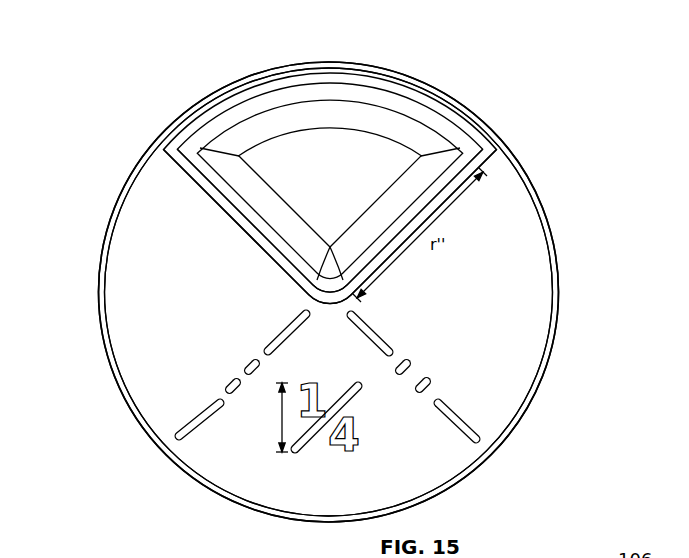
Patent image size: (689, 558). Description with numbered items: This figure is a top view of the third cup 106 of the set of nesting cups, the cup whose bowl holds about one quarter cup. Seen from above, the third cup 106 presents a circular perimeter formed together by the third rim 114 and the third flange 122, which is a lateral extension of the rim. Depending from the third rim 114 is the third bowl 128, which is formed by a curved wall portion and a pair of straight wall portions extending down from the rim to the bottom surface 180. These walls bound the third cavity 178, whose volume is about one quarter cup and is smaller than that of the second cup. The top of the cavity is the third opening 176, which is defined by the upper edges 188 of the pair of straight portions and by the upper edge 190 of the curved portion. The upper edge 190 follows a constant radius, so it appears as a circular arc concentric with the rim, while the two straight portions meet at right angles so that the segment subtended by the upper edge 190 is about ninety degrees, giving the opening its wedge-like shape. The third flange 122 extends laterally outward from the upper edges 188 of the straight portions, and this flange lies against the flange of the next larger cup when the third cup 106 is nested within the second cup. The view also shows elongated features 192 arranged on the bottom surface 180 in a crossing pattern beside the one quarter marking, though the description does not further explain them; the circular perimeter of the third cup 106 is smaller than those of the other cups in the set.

The third cup 106 is at (570, 38).
The third rim 114 is at (541, 380).
The third flange 122 is at (103, 327).
The third bowl 128 is at (335, 135).
The third opening 176 is at (243, 142).
The third cavity 178 is at (365, 157).
The bottom surface 180 is at (277, 148).
The upper edges of the pair of third straight portions 188 is at (237, 193).
The upper edge of the third curved portion 190 is at (298, 130).
The slot 192 is at (507, 487).